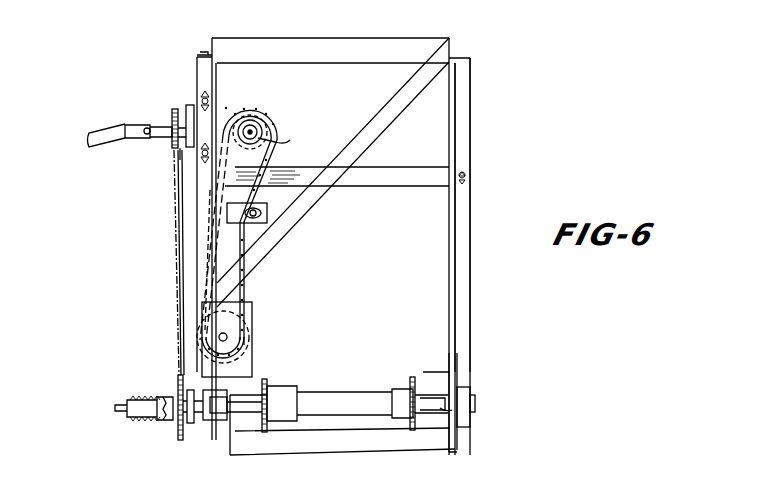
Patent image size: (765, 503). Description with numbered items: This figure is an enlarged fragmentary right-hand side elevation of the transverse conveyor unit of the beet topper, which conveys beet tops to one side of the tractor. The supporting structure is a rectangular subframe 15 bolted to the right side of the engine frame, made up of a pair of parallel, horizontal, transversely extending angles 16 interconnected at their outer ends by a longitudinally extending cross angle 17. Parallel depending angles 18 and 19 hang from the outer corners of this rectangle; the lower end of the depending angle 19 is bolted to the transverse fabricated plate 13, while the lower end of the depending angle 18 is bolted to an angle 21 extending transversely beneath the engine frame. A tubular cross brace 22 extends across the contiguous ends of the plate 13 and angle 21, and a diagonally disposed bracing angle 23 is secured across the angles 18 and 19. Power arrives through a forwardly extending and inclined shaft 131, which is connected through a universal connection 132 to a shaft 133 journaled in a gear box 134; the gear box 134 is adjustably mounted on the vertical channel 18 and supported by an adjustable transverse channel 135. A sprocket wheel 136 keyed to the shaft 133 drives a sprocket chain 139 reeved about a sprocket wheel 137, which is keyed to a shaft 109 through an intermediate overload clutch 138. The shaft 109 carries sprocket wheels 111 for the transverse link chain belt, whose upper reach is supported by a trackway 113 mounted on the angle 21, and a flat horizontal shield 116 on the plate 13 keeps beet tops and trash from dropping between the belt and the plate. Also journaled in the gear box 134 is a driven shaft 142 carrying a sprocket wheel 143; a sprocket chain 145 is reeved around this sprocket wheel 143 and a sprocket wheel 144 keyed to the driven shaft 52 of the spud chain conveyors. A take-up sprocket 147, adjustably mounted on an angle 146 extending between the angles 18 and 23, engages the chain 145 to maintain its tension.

The fabricated plate 13 is at (458, 447).
The rectangular subframe 15 is at (509, 66).
The transversely extending angles 16 is at (210, 50).
The cross angle 17 is at (352, 38).
The depending angle 18 is at (196, 74).
The depending angle 19 is at (470, 118).
The angle 21 is at (226, 445).
The tubular cross brace 22 is at (347, 456).
The bracing angle 23 is at (366, 126).
The driven shaft 52 is at (228, 338).
The shaft 109 is at (470, 412).
The sprocket wheels 111 is at (268, 380).
The trackway 113 is at (257, 388).
The shield 116 is at (428, 372).
The shaft 131 is at (106, 128).
The universal connection 132 is at (151, 123).
The shaft 133 is at (180, 160).
The gear box 134 is at (227, 104).
The transverse channel 135 is at (386, 186).
The sprocket wheel 136 is at (175, 108).
The sprocket wheel 137 is at (181, 441).
The overload clutch 138 is at (165, 394).
The sprocket chain 139 is at (174, 264).
The driven shaft 142 is at (257, 128).
The sprocket wheel 143 is at (287, 141).
The sprocket wheel 144 is at (248, 312).
The sprocket chain 145 is at (248, 286).
The angle 146 is at (232, 220).
The take-up sprocket 147 is at (262, 226).